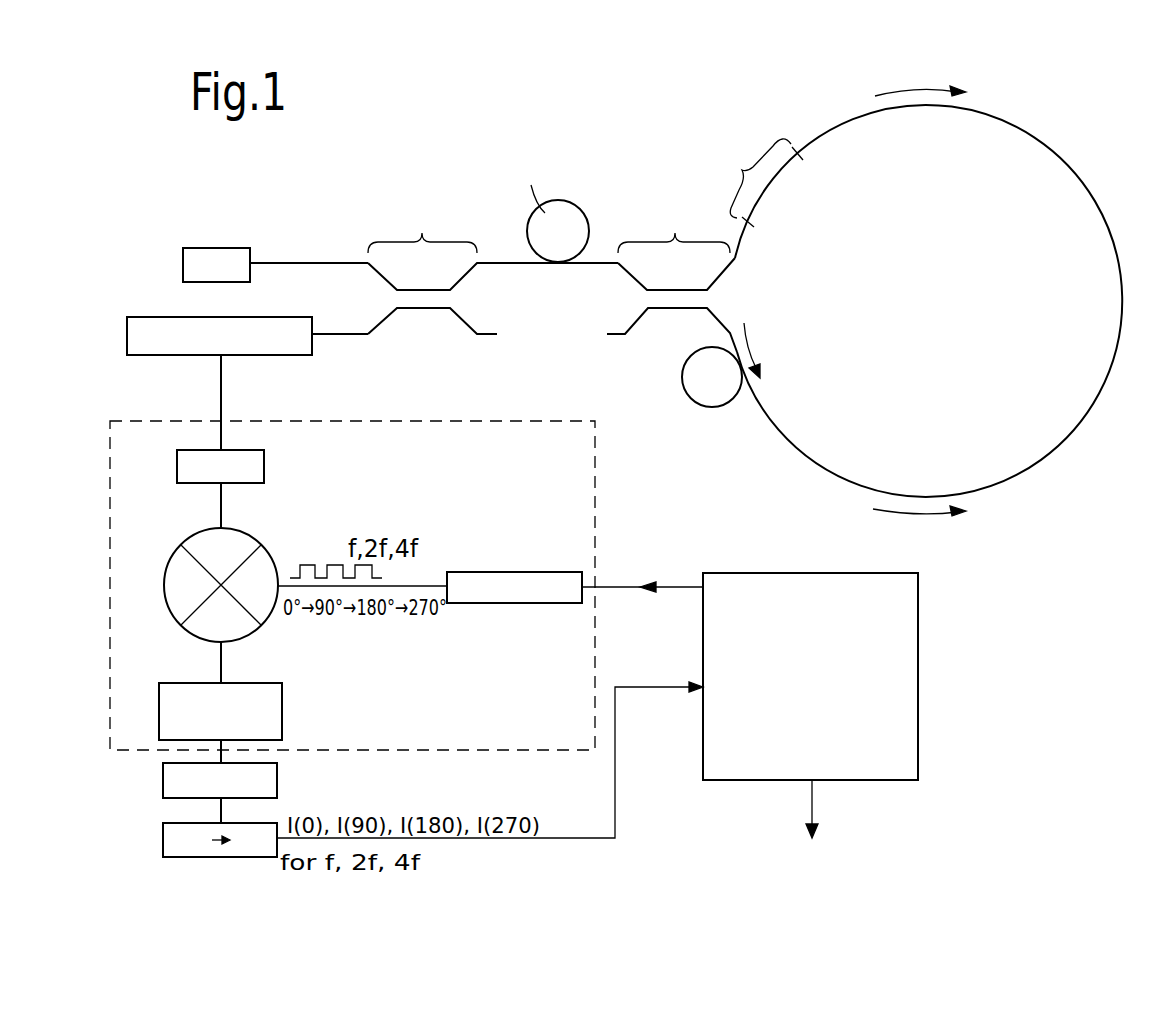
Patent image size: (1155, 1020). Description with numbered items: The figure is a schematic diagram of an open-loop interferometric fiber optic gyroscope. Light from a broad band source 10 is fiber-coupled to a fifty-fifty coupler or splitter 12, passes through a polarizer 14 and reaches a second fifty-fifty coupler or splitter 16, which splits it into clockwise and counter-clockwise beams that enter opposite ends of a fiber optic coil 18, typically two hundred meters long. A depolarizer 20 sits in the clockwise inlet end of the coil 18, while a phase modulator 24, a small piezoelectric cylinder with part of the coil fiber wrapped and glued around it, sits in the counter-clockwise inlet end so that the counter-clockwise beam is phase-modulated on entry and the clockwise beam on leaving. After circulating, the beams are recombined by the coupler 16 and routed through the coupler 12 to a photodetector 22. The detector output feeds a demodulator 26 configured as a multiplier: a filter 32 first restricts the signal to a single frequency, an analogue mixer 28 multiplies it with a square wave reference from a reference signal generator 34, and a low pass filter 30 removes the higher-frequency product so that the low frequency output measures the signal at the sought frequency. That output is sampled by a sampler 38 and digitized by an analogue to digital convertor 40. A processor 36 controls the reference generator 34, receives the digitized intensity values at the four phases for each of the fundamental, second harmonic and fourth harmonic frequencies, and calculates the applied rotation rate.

The broad band source 10 is at (223, 247).
The 50:50 coupler or splitter 12 is at (422, 233).
The polarizer 14 is at (555, 215).
The 50:50 coupler or splitter 16 is at (675, 233).
The fiber optic coil 18 is at (934, 311).
The depolarizer 20 is at (743, 165).
The photodetector 22 is at (127, 337).
The phase modulator 24 is at (697, 370).
The demodulator 26 is at (108, 492).
The analogue mixer 28 is at (155, 603).
The low pass filter 30 is at (282, 716).
The filter 32 is at (265, 465).
The reference signal generator 34 is at (527, 572).
The processor 36 is at (717, 780).
The sampler 38 is at (277, 787).
The analogue to digital convertor 40 is at (163, 840).